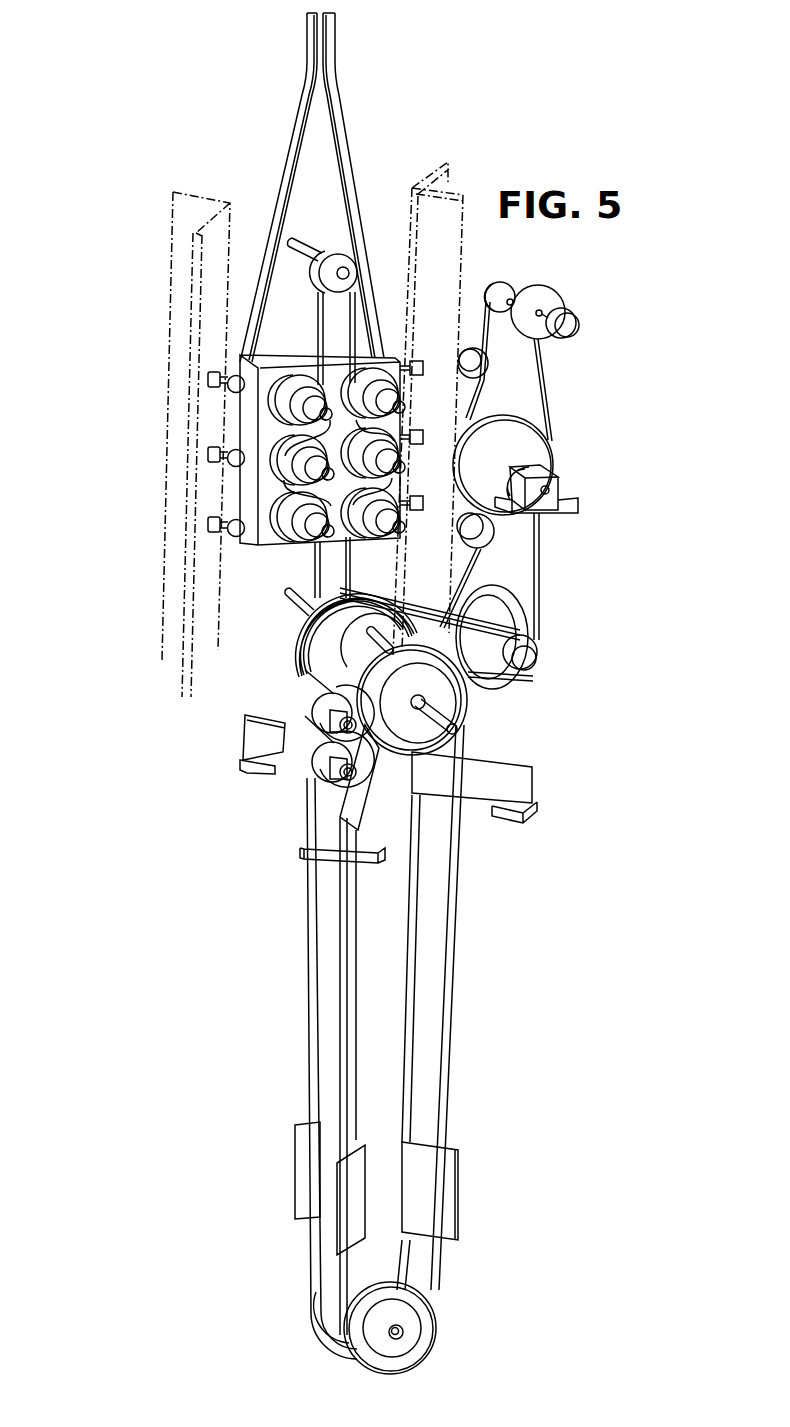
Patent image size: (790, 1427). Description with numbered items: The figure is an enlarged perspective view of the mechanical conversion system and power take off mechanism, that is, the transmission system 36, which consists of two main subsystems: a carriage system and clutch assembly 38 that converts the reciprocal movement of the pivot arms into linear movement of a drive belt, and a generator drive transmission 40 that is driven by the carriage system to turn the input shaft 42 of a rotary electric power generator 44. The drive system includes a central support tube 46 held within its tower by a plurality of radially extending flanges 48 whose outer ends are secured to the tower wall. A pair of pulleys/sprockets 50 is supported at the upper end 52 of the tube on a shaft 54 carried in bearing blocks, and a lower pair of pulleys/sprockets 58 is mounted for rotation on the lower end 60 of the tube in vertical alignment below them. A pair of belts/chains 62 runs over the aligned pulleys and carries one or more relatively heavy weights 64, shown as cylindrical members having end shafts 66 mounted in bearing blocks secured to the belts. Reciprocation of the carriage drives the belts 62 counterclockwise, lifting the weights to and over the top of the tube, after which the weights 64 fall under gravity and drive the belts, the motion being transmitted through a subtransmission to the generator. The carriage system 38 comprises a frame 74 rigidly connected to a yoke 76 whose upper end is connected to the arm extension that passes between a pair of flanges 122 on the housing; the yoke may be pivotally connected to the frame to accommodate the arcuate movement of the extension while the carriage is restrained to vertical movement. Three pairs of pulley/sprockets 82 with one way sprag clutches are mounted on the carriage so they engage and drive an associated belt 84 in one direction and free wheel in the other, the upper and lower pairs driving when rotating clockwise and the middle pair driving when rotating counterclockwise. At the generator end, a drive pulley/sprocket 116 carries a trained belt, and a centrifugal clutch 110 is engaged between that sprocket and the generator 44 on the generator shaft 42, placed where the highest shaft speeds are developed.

The transmission system 36 is at (600, 526).
The carriage system and clutch assembly 38 is at (158, 455).
The generator drive transmission 40 is at (530, 688).
The input shaft 42 is at (547, 304).
The rotary electric power generator 44 is at (578, 318).
The central support tube 46 is at (393, 898).
The flanges 48 is at (517, 784).
The pulleys/sprockets 50 is at (333, 650).
The upper end 52 is at (347, 660).
The shaft 54 is at (454, 728).
The lower pair of pulleys/sprockets 58 is at (330, 1320).
The lower end 60 is at (385, 1273).
The belts/chains 62 is at (310, 938).
The weights 64 is at (252, 713).
The end shafts 66 is at (358, 745).
The frame 74 is at (283, 372).
The yoke 76 is at (297, 131).
The pulley/sprockets 82 is at (330, 500).
The belt 84 is at (315, 308).
The centrifugal clutch 110 is at (538, 338).
The drive pulley/sprocket 116 is at (518, 283).
The flanges 122 is at (548, 457).